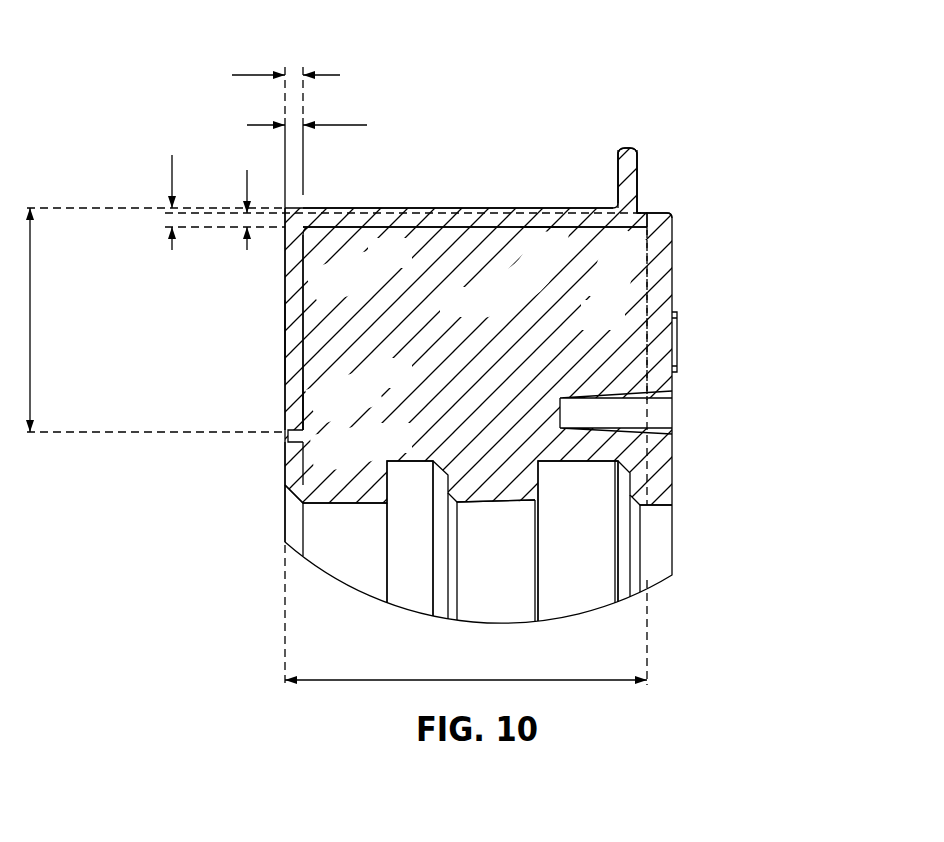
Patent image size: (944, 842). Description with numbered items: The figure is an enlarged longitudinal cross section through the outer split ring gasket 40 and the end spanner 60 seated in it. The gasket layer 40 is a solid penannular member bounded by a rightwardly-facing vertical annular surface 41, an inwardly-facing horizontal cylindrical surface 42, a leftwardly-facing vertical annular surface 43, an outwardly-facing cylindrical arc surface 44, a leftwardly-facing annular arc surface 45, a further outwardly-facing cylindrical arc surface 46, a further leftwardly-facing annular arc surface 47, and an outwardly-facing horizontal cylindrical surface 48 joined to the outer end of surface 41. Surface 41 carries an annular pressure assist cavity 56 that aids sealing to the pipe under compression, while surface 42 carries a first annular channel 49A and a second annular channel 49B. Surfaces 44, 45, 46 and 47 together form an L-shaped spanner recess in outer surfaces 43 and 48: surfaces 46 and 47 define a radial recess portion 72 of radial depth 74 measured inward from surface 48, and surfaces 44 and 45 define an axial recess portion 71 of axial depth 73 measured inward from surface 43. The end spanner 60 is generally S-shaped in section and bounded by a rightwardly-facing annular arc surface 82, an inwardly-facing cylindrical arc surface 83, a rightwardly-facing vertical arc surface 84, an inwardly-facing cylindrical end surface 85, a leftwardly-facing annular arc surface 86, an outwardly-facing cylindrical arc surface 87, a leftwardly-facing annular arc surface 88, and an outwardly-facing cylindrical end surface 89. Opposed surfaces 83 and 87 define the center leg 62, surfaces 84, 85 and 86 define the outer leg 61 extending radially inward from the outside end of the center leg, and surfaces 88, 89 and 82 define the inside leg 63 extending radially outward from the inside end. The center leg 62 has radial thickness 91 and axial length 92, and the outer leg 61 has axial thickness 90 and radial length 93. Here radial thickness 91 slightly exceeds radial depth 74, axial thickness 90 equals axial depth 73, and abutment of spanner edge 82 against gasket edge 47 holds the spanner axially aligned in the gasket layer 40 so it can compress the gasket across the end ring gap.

The outer split ring gasket 40 is at (758, 320).
The rightwardly-facing vertical annular surface 41 is at (672, 253).
The inwardly-facing horizontal cylindrical surface 42 is at (347, 505).
The leftwardly-facing vertical annular surface 43 is at (284, 479).
The outwardly-facing horizontal cylindrical arc surface 44 is at (306, 410).
The leftwardly-facing vertical annular arc surface 45 is at (300, 383).
The outwardly-facing horizontal cylindrical arc surface 46 is at (520, 226).
The leftwardly-facing vertical annular arc surface 47 is at (630, 228).
The outwardly-facing horizontal cylindrical surface 48 is at (657, 212).
The first annular channel 49A is at (411, 483).
The second annular channel 49B is at (575, 482).
The annular pressure assist cavity 56 is at (617, 412).
The end spanner 60 is at (481, 166).
The outer leg 61 is at (286, 335).
The center leg 62 is at (360, 215).
The inside leg 63 is at (641, 164).
The axial recess portion 71 is at (285, 437).
The radial recess portion 72 is at (645, 207).
The axial depth 73 is at (337, 75).
The radial depth 74 is at (172, 186).
The rightwardly-facing vertical annular arc surface 82 is at (640, 183).
The inwardly-facing horizontal cylindrical arc surface 83 is at (550, 228).
The rightwardly-facing vertical arc surface 84 is at (305, 293).
The inwardly-facing horizontal cylindrical arc end surface 85 is at (302, 453).
The leftwardly-facing vertical annular arc surface 86 is at (285, 305).
The outwardly-facing horizontal cylindrical arc surface 87 is at (427, 207).
The leftwardly-facing vertical annular arc surface 88 is at (616, 185).
The outwardly-facing horizontal cylindrical arc end surface 89 is at (625, 147).
The axial thickness 90 is at (248, 124).
The radial thickness 91 is at (247, 178).
The axial length 92 is at (460, 680).
The radial length 93 is at (30, 318).